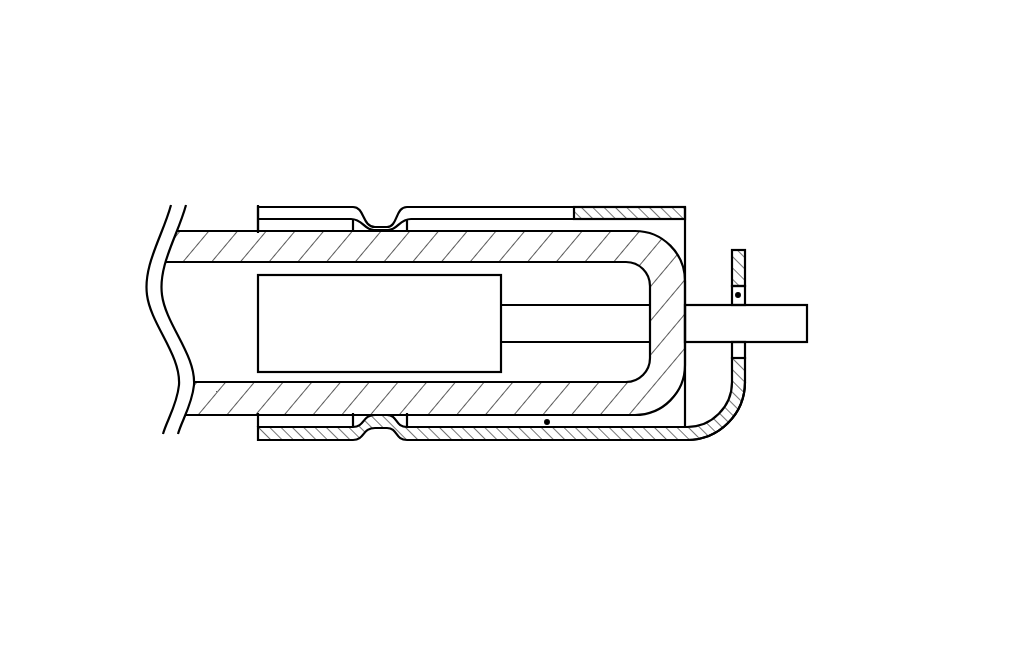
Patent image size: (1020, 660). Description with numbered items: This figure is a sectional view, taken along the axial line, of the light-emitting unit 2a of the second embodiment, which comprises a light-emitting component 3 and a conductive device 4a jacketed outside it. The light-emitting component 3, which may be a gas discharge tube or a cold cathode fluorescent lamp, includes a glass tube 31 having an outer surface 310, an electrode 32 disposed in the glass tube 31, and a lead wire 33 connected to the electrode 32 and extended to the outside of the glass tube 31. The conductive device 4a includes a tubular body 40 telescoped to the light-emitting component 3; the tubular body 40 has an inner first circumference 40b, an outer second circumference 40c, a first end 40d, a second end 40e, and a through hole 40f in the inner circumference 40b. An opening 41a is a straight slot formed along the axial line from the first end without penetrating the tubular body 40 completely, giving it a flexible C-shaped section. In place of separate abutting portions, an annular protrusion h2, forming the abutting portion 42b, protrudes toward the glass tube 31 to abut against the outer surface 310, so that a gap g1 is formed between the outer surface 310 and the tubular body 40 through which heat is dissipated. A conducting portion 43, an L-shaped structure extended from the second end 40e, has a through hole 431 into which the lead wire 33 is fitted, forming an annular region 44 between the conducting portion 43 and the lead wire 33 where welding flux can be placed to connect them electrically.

The light-emitting unit 2a is at (118, 47).
The light-emitting component 3 is at (215, 227).
The glass tube 31 is at (580, 248).
The outer surface 310 is at (224, 418).
The electrode 32 is at (455, 292).
The lead wire 33 is at (712, 320).
The conductive device 4a is at (518, 188).
The tubular body 40 is at (623, 446).
The first circumference 40b is at (297, 427).
The second circumference 40c is at (313, 442).
The first end 40d is at (255, 229).
The second end 40e is at (688, 212).
The through hole 40f is at (250, 229).
The opening 41a is at (413, 207).
The abutting portion 42b is at (353, 441).
The conducting portion 43 is at (745, 398).
The through hole 431 is at (748, 350).
The annular region 44 is at (747, 296).
The gap g1 is at (547, 430).
The annular protrusion h2 is at (385, 441).